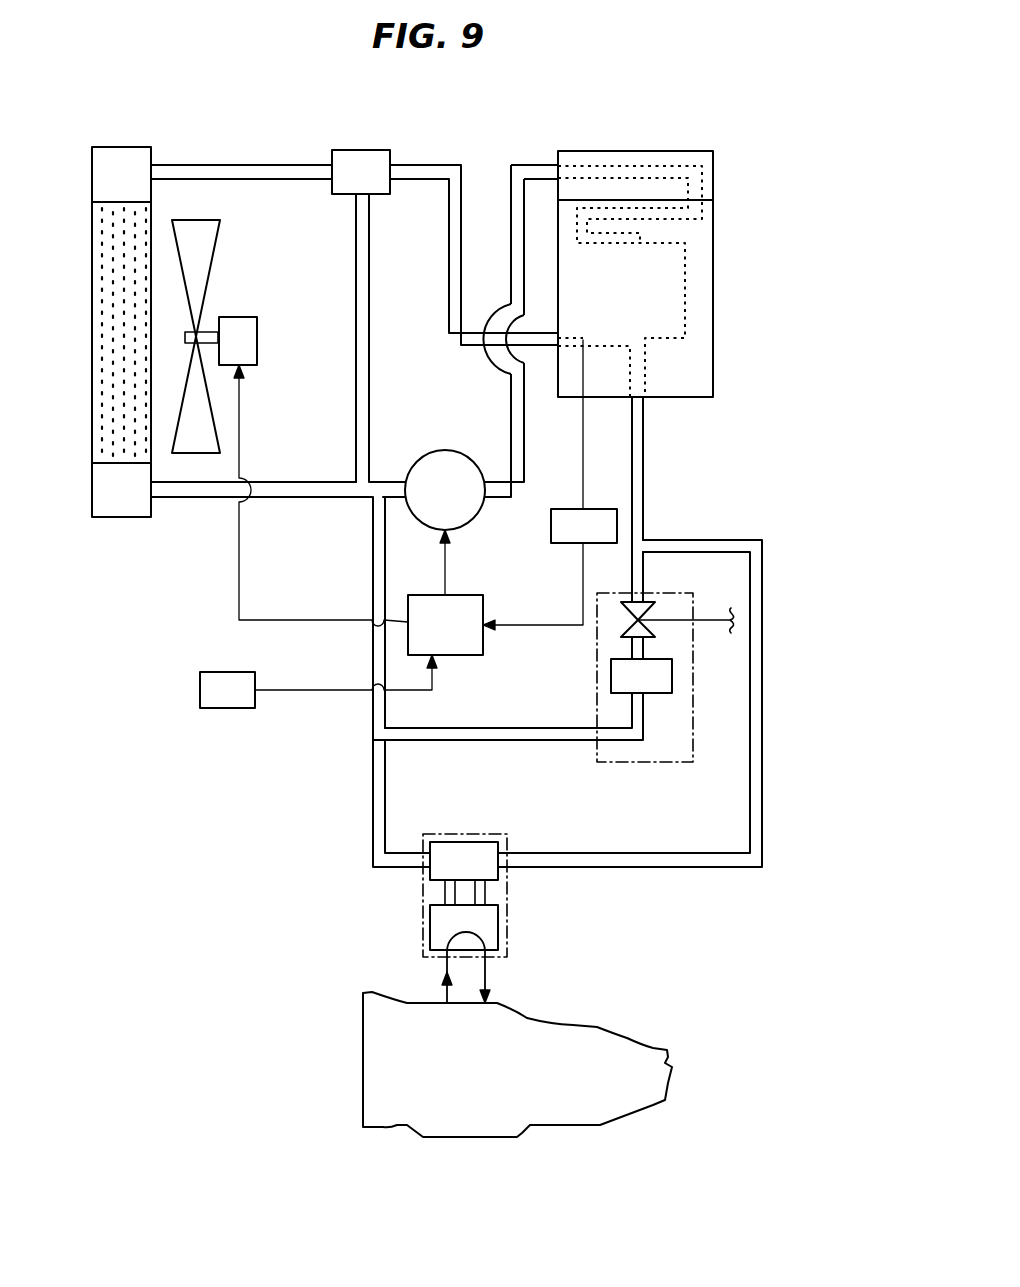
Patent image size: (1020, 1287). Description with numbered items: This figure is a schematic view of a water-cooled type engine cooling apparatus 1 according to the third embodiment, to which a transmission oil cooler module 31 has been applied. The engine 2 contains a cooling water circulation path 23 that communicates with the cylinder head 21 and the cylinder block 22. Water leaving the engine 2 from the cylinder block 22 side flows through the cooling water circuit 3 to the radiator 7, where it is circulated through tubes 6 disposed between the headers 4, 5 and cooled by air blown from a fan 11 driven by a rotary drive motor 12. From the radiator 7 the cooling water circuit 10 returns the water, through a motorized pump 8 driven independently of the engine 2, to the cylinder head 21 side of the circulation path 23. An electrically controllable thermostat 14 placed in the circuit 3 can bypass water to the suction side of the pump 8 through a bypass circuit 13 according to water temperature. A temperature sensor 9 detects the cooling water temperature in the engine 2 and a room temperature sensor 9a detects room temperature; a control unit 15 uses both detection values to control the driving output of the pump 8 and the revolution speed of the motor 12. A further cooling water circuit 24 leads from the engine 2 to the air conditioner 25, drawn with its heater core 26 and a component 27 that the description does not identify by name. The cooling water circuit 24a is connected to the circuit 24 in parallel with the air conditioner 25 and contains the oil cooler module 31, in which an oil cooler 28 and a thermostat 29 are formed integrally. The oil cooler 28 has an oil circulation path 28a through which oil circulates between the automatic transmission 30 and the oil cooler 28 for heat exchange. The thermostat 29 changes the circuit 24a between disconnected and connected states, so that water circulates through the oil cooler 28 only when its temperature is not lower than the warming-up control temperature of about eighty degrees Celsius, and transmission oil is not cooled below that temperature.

The cooling apparatus 1 is at (470, 140).
The engine 2 is at (630, 292).
The cooling water circuit 3 is at (239, 165).
The header 4 is at (122, 147).
The header 5 is at (122, 517).
The tubes 6 is at (120, 312).
The radiator 7 is at (103, 333).
The motorized pump 8 is at (447, 450).
The temperature sensor 9 is at (551, 526).
The room temperature sensor 9a is at (200, 690).
The cooling water circuit 10 is at (312, 500).
The fan 11 is at (220, 236).
The rotary drive motor 12 is at (257, 340).
The bypass circuit 13 is at (369, 322).
The thermostat 14 is at (362, 150).
The control unit 15 is at (455, 655).
The cylinder head 21 is at (606, 151).
The cylinder block 22 is at (713, 287).
The cooling water circulation path 23 is at (645, 165).
The cooling water circuit 24 is at (643, 472).
The cooling water circuit 24a is at (628, 867).
The air conditioner 25 is at (641, 688).
The heater core 26 is at (611, 679).
The flow control valve 27 is at (650, 600).
The oil cooler 28 is at (498, 927).
The oil circulation path 28a is at (485, 970).
The thermostat 29 is at (465, 842).
The automatic transmission 30 is at (627, 1038).
The oil cooler module 31 is at (460, 894).